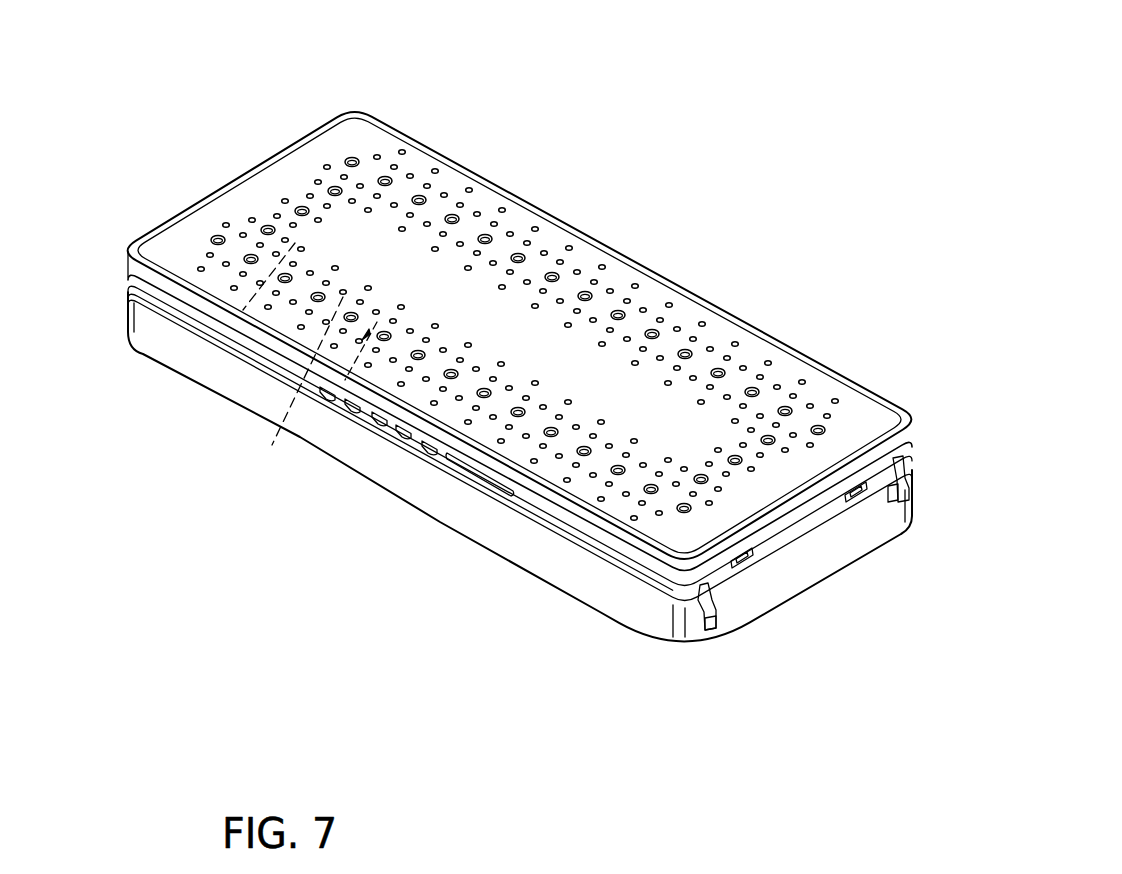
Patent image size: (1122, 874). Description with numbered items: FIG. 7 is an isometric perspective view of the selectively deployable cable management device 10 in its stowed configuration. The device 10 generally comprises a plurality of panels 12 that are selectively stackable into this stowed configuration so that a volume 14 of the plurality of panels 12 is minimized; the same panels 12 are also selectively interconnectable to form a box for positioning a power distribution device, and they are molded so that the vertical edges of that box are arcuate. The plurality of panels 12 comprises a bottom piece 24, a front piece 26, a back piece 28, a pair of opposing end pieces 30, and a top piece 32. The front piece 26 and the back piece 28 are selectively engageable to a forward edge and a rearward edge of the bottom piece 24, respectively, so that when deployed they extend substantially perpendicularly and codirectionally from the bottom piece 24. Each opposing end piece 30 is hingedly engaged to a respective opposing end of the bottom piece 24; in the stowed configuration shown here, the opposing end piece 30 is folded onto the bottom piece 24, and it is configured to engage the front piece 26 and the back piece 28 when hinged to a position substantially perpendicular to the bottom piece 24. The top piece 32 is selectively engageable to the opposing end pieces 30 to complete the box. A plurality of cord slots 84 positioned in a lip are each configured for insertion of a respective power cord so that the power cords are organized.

The selectively deployable cable management device 10 is at (662, 125).
The panels 12 is at (500, 186).
The volume 14 is at (915, 475).
The bottom piece 24 is at (573, 577).
The front piece 26 is at (262, 412).
The back piece 28 is at (272, 445).
The opposing end pieces 30 is at (215, 333).
The top piece 32 is at (578, 372).
The cord slots 84 is at (338, 423).